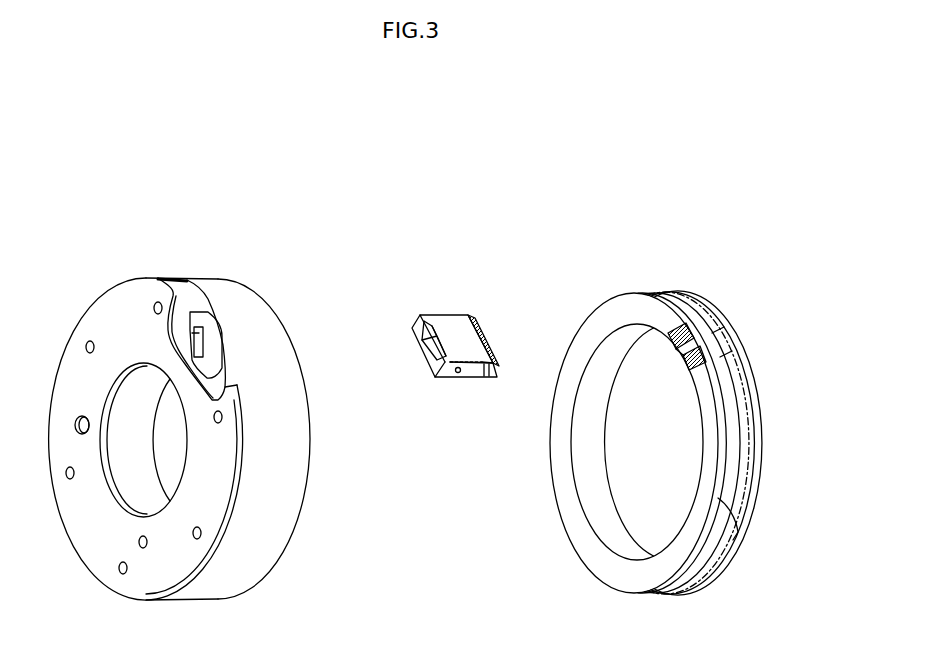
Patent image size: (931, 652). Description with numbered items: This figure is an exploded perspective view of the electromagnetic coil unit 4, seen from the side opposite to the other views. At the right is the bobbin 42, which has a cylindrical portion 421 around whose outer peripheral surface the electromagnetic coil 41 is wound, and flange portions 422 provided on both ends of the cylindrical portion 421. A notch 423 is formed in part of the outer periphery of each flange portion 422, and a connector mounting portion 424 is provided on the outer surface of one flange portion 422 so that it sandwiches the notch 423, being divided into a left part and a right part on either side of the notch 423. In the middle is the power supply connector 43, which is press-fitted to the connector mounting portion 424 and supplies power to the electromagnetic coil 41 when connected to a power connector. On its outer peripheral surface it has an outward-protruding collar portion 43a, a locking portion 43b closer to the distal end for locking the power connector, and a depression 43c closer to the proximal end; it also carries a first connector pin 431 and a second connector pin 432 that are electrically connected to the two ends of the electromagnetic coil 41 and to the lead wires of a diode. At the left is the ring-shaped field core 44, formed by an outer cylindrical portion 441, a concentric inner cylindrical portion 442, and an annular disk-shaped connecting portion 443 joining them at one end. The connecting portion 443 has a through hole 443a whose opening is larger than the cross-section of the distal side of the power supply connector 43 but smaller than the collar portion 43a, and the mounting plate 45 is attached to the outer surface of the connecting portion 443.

The electromagnetic coil unit 4 is at (366, 165).
The electromagnetic coil 41 is at (762, 432).
The bobbin 42 is at (637, 274).
The cylindrical portion 421 is at (727, 397).
The flange portions 422 is at (755, 478).
The notch 423 is at (697, 338).
The connector mounting portion 424 is at (655, 342).
The power supply connector 43 is at (421, 283).
The first connector pin 431 is at (417, 337).
The second connector pin 432 is at (427, 358).
The collar portion 43a is at (488, 380).
The locking portion 43b is at (457, 372).
The depression 43c is at (482, 332).
The field core 44 is at (154, 258).
The outer cylindrical portion 441 is at (268, 523).
The inner cylindrical portion 442 is at (122, 466).
The connecting portion 443 is at (187, 303).
The through hole 443a is at (197, 350).
The mounting plate 45 is at (103, 310).